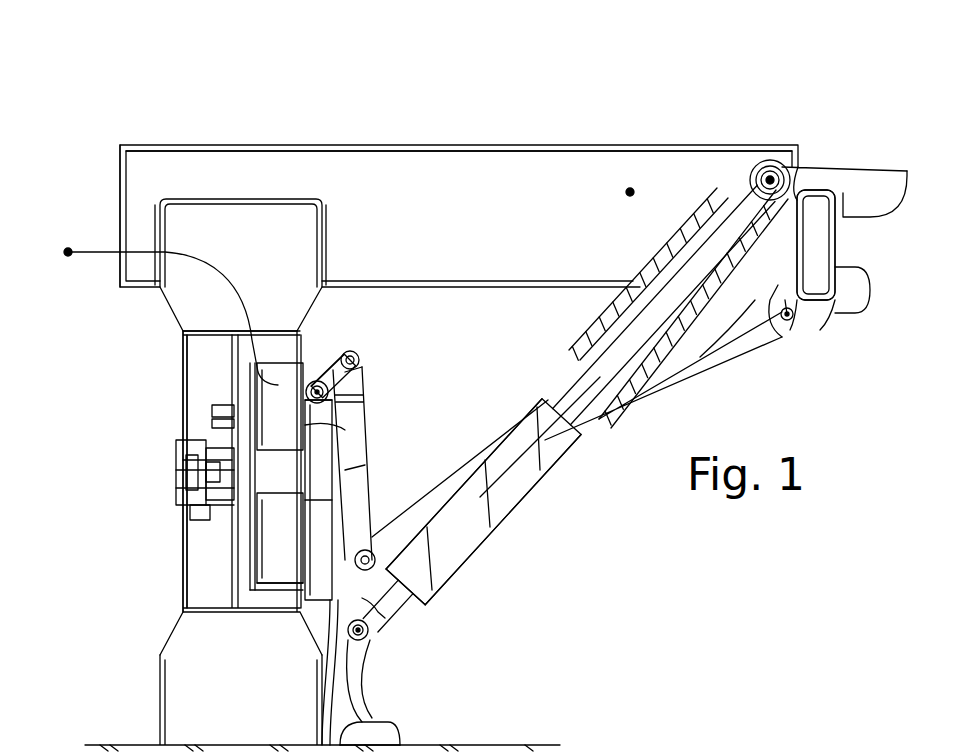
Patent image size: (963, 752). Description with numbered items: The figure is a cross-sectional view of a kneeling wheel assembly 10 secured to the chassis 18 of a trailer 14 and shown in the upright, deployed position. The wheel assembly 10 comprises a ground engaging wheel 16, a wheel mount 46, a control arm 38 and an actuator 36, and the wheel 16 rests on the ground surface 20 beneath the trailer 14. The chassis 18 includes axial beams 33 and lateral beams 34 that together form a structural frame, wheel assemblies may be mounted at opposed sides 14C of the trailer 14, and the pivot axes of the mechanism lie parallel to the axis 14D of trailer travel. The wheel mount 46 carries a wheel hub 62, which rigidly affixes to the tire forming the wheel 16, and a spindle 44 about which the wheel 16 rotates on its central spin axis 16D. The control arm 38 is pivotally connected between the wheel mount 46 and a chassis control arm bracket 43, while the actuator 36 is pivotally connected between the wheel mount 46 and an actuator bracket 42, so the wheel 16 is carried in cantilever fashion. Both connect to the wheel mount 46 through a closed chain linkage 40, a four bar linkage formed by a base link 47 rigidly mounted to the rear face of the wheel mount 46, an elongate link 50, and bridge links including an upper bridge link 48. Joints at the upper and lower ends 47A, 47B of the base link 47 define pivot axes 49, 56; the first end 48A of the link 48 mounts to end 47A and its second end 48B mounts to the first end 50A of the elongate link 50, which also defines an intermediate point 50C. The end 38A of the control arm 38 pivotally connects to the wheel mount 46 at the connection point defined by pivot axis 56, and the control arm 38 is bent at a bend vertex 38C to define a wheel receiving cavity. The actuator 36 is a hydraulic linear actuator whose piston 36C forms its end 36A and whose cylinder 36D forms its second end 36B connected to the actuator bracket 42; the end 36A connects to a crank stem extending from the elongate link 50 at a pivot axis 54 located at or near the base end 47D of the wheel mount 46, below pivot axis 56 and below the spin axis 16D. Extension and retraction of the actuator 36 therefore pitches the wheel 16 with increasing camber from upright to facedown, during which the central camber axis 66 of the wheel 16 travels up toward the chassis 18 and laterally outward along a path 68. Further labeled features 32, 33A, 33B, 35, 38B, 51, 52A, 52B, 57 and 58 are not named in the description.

The wheel assembly 10 is at (110, 62).
The trailer 14 is at (483, 147).
The opposed sides of the trailer 14C is at (118, 158).
The axis of trailer travel 14D is at (626, 190).
The ground engaging wheel 16 is at (168, 706).
The central spin axis 16D is at (122, 468).
The chassis 18 is at (806, 190).
The ground surface 20 is at (402, 724).
The drive housing 32 is at (120, 440).
The axial beams 33 is at (836, 230).
The upper bracket arm 33A is at (828, 195).
The lower bracket arm 33B is at (818, 302).
The lateral beams 34 is at (387, 175).
The lifting assembly 35 is at (788, 408).
The actuator 36 is at (555, 445).
The end of the actuator 36A is at (370, 637).
The second end of the actuator 36B is at (760, 172).
The piston 36C is at (512, 493).
The cylinder 36D is at (750, 328).
The control arm 38 is at (700, 357).
The end of the control arm 38A is at (388, 718).
The arm lower rail 38B is at (792, 320).
The bend vertex 38C is at (467, 482).
The closed chain linkage 40 is at (442, 342).
The actuator bracket 42 is at (872, 178).
The chassis control arm bracket 43 is at (860, 278).
The spindle 44 is at (122, 325).
The wheel mount 46 is at (319, 383).
The base link 47 is at (320, 440).
The upper end of the base link 47A is at (327, 390).
The lower end of the base link 47B is at (345, 672).
The base end of the wheel mount 47D is at (262, 600).
The upper bridge link 48 is at (358, 370).
The first end of the upper bridge link 48A is at (367, 445).
The second end of the upper bridge link 48B is at (360, 358).
The pivot axis 49 is at (212, 440).
The elongate link 50 is at (355, 473).
The first end of the elongate link 50A is at (368, 370).
The intermediate point of the elongate link 50C is at (388, 558).
The connecting link 51 is at (356, 350).
The pivot joint 52A is at (358, 493).
The lower pivot joint 52B is at (364, 642).
The pivot axis 54 is at (392, 622).
The pivot axis 56 is at (368, 548).
The rod end bearing 57 is at (776, 165).
The arm pivot 58 is at (780, 316).
The wheel hub 62 is at (221, 412).
The central camber axis 66 is at (248, 468).
The path 68 is at (108, 250).